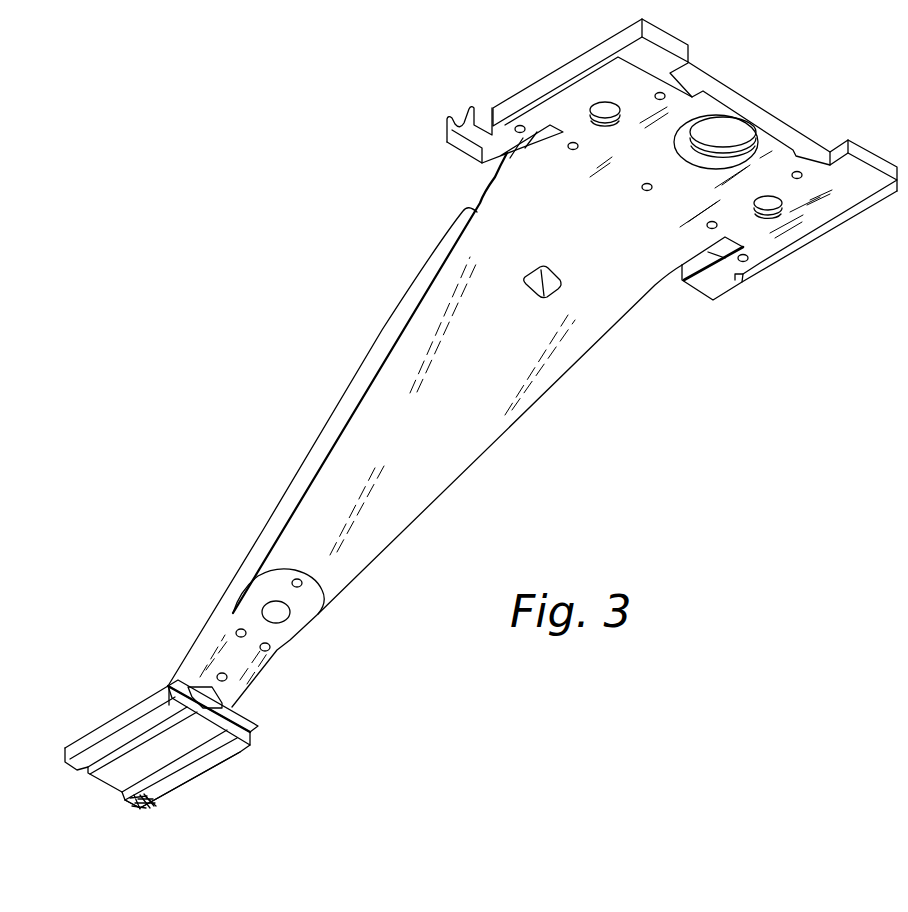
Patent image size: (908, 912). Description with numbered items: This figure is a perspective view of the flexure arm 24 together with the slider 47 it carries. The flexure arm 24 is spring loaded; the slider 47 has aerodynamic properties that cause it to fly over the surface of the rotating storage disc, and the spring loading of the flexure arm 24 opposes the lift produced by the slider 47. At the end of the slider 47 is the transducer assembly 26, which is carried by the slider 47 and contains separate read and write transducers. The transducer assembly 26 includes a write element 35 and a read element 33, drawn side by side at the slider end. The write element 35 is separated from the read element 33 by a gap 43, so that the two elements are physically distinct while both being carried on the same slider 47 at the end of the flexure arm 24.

The flexure arm 24 is at (325, 345).
The slider 47 is at (250, 730).
The transducer assembly 26 is at (143, 800).
The read element 33 is at (150, 803).
The write element 35 is at (137, 810).
The gap 43 is at (143, 810).